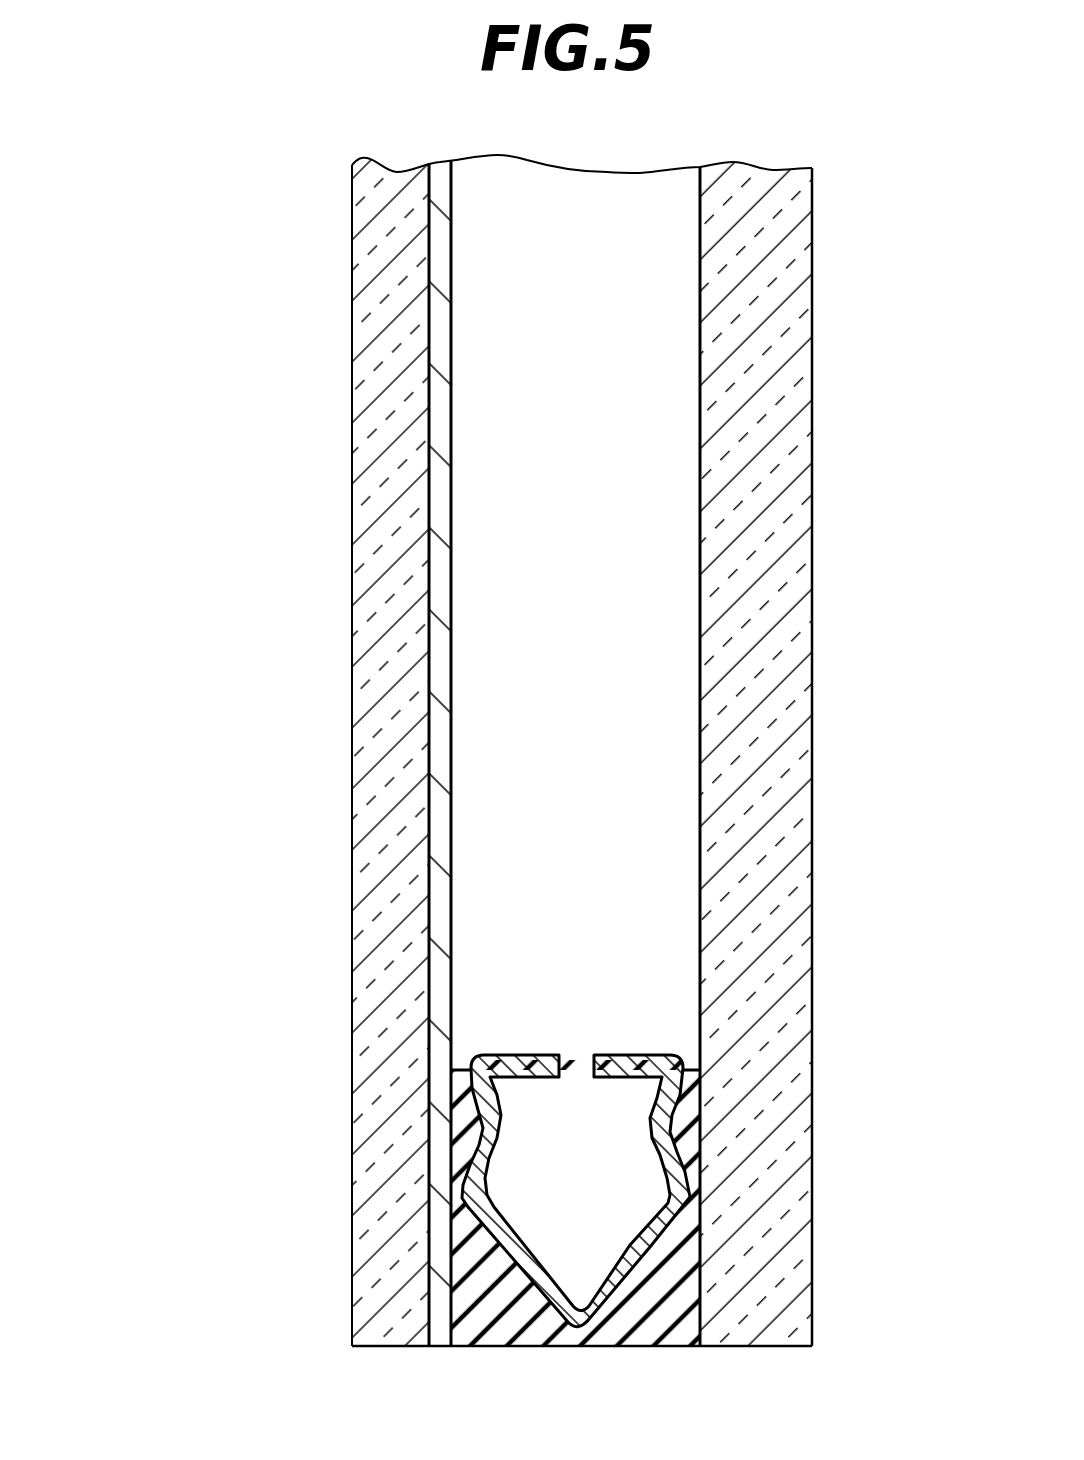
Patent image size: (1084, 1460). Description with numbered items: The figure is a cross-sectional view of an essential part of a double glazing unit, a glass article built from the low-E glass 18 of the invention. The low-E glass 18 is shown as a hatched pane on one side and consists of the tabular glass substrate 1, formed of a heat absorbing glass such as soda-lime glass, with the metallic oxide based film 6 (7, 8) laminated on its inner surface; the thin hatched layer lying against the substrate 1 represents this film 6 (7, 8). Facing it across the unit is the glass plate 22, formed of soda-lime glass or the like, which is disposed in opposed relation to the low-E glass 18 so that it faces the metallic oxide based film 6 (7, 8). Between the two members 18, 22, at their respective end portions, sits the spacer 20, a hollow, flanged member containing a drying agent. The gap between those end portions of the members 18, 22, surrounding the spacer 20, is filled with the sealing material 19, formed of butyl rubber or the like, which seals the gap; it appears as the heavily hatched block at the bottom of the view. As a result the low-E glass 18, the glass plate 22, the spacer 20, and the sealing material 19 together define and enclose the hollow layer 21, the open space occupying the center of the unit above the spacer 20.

The glass substrate 1 is at (367, 572).
The metallic oxide based film 6 is at (306, 748).
The metallic oxide based film 7 is at (440, 748).
The metallic oxide based film 8 is at (440, 715).
The low-E glass 18 is at (142, 532).
The sealing material 19 is at (670, 1283).
The spacer 20 is at (642, 1060).
The hollow layer 21 is at (630, 523).
The glass plate 22 is at (783, 650).